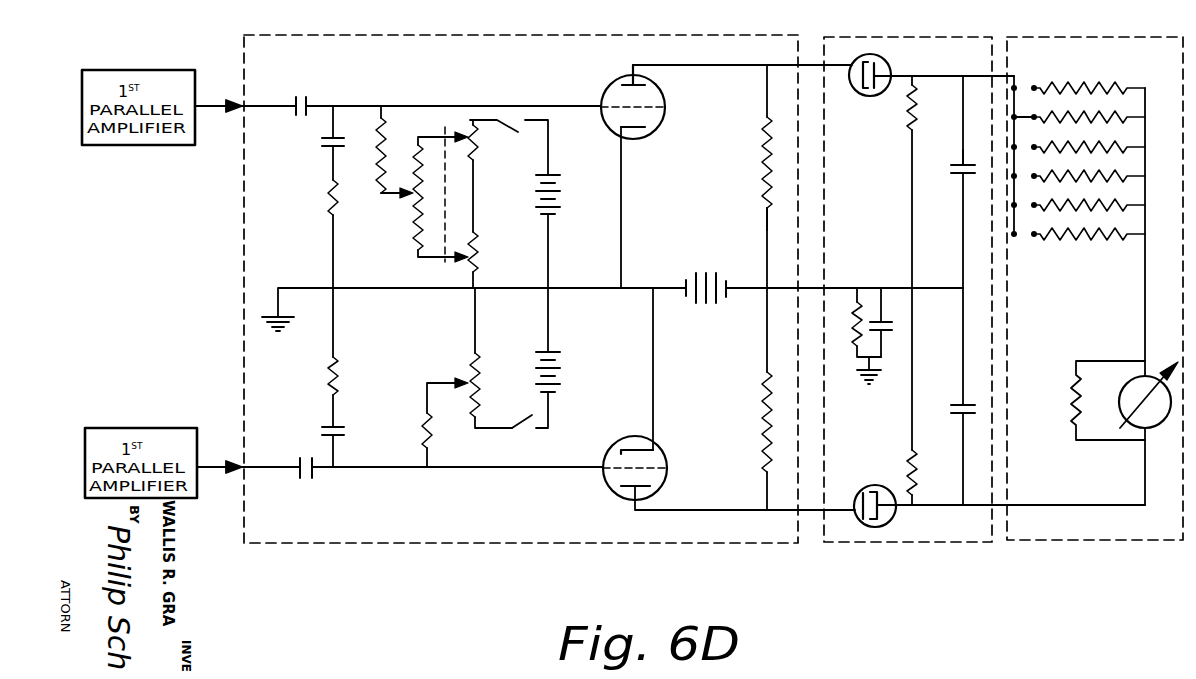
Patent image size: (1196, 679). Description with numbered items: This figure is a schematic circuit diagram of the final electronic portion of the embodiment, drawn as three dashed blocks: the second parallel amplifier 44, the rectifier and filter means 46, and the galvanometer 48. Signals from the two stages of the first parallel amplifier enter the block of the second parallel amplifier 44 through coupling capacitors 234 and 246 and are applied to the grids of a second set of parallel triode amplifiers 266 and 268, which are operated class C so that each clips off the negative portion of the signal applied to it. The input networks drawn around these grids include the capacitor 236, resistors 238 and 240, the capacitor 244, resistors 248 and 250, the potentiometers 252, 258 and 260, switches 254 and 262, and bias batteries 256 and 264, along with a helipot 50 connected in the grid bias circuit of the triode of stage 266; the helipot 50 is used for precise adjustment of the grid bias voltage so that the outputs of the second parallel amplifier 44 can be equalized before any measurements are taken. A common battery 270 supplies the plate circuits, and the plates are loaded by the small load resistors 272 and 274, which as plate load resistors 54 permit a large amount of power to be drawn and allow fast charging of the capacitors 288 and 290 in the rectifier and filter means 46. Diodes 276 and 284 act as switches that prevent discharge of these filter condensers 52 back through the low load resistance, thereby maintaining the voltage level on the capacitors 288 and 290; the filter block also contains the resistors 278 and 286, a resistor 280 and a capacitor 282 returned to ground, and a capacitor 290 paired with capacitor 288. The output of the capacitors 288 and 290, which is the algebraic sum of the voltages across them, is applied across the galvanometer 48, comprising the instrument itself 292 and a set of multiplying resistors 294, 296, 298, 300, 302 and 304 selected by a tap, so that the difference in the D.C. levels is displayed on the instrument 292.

The second parallel amplifier 44 is at (508, 35).
The rectifier and filter means 46 is at (873, 37).
The galvanometer 48 is at (1060, 37).
The helipot 50 is at (416, 211).
The filter condensers 52 is at (951, 166).
The plate load resistors 54 is at (761, 177).
The coupling capacitor 234 is at (308, 101).
The capacitor 236 is at (321, 150).
The resistor 238 is at (323, 202).
The resistor 240 is at (328, 374).
The capacitor 244 is at (329, 427).
The coupling capacitor 246 is at (313, 478).
The resistor 248 is at (388, 134).
The resistor 250 is at (422, 415).
The potentiometer 252 is at (479, 140).
The switch 254 is at (520, 96).
The battery 256 is at (563, 209).
The potentiometer 258 is at (478, 258).
The potentiometer 260 is at (481, 377).
The switch 262 is at (522, 432).
The battery 264 is at (560, 392).
The triode amplifier 266 is at (735, 99).
The triode amplifier 268 is at (730, 482).
The battery 270 is at (728, 298).
The load resistor 272 is at (758, 146).
The load resistor 274 is at (765, 411).
The diode 276 is at (874, 66).
The resistor 278 is at (904, 112).
The resistor 280 is at (854, 310).
The capacitor 282 is at (894, 339).
The diode 284 is at (893, 520).
The resistor 286 is at (909, 467).
The capacitor 288 is at (970, 187).
The capacitor 290 is at (966, 418).
The instrument 292 is at (1120, 482).
The multiplying resistor 294 is at (1118, 67).
The multiplying resistor 296 is at (1085, 114).
The multiplying resistor 298 is at (1085, 145).
The multiplying resistor 300 is at (1073, 177).
The multiplying resistor 302 is at (1080, 205).
The multiplying resistor 304 is at (1072, 234).